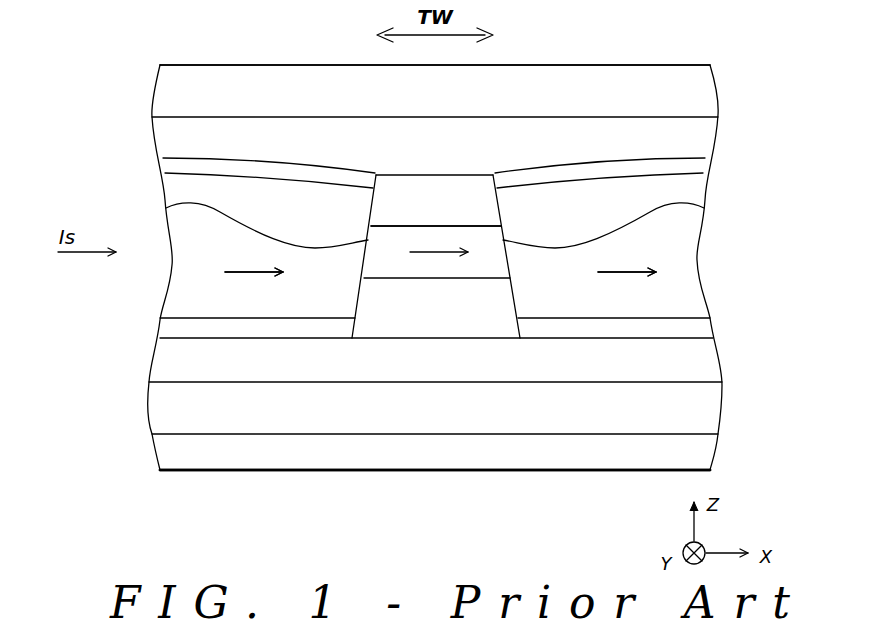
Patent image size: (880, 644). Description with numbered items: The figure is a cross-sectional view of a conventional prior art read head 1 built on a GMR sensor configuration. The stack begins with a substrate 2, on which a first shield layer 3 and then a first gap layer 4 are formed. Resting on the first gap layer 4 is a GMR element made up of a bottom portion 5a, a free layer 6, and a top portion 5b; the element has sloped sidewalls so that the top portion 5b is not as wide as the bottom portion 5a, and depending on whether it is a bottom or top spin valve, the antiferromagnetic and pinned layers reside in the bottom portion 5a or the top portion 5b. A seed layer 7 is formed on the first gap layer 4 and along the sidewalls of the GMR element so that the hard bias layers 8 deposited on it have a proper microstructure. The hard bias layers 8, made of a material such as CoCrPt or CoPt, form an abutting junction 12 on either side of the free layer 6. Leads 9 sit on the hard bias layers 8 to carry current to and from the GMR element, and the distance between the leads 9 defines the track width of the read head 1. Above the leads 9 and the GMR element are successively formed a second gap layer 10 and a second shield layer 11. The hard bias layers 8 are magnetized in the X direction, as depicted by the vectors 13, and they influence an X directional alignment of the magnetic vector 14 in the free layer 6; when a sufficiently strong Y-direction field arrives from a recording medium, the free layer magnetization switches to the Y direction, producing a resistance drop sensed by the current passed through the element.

The read head 1 is at (138, 58).
The substrate 2 is at (700, 455).
The first shield layer 3 is at (703, 408).
The first gap layer 4 is at (703, 360).
The bottom portion 5a is at (387, 325).
The top portion 5b is at (455, 195).
The free layer 6 is at (493, 255).
The seed layer 7 is at (170, 328).
The hard bias layers 8 is at (195, 280).
The leads 9 is at (170, 165).
The second gap layer 10 is at (700, 135).
The second shield layer 11 is at (702, 88).
The abutting junction 12 is at (166, 207).
The vectors 13 is at (245, 275).
The magnetic vector 14 is at (440, 253).